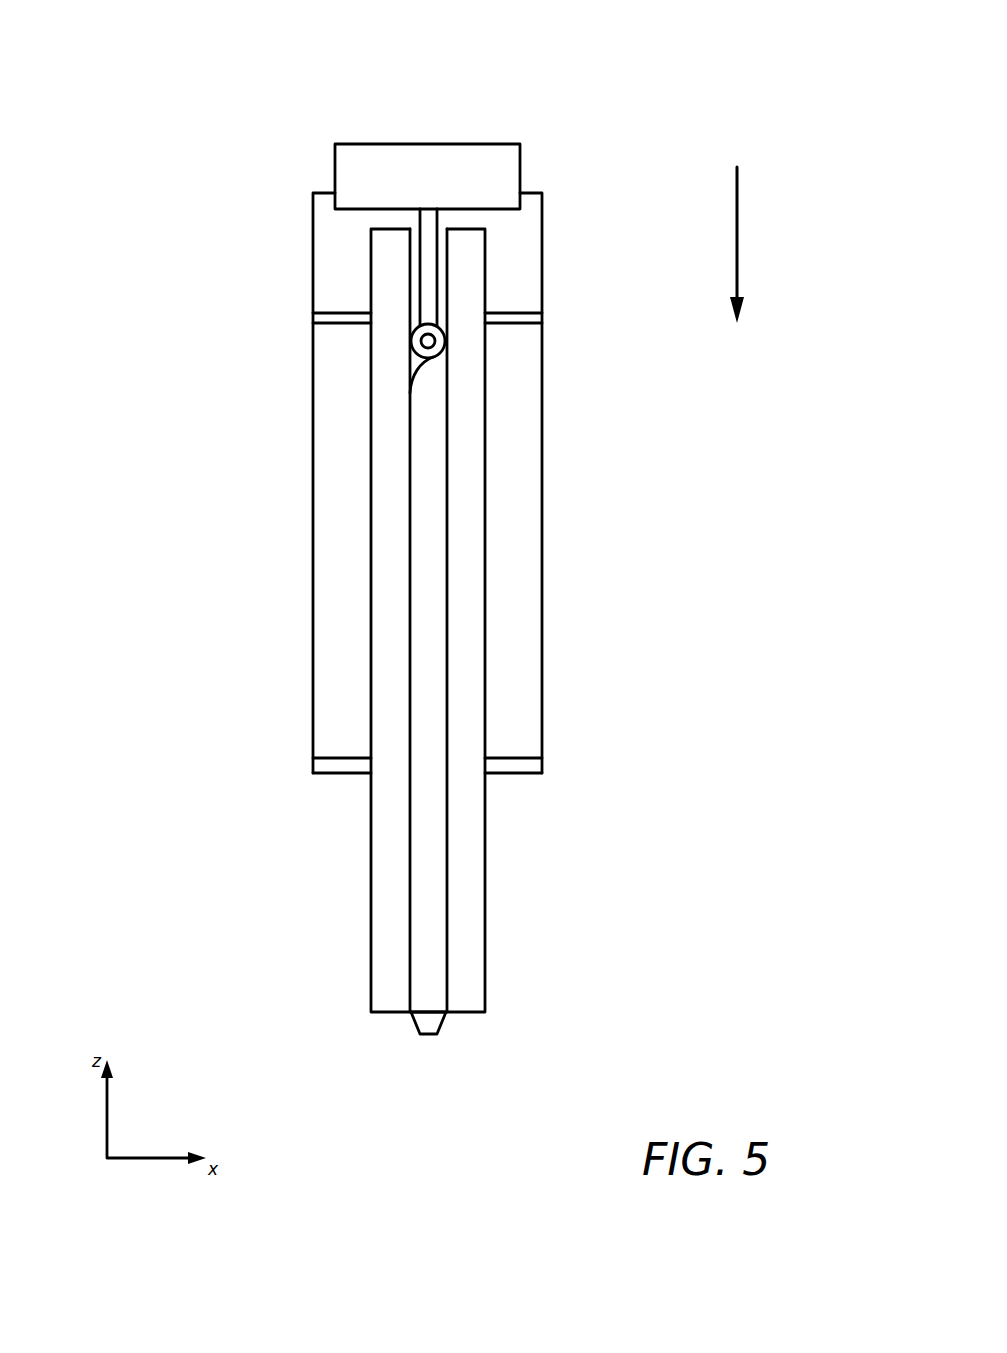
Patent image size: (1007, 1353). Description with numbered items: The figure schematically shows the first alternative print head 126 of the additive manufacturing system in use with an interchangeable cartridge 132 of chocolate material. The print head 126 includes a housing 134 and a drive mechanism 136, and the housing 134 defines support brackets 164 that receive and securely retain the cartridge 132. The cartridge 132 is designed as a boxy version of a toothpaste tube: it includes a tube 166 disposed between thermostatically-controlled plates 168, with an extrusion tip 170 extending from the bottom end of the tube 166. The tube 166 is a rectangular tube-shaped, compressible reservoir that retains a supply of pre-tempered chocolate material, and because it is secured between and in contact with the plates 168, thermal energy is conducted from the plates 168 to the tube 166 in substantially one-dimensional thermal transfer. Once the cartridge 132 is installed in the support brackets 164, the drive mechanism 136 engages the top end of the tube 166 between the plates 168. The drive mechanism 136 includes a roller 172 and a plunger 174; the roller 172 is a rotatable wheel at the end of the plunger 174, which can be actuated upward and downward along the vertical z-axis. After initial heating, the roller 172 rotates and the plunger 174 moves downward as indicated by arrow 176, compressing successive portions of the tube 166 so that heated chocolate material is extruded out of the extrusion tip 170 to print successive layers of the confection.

The print head 126 is at (214, 227).
The cartridge 132 is at (526, 864).
The housing 134 is at (543, 243).
The drive mechanism 136 is at (522, 112).
The support brackets 164 is at (327, 313).
The tube 166 is at (435, 557).
The thermostatically-controlled plates 168 is at (377, 660).
The extrusion tip 170 is at (433, 1023).
The roller 172 is at (433, 353).
The plunger 174 is at (425, 257).
The arrow 176 is at (737, 215).